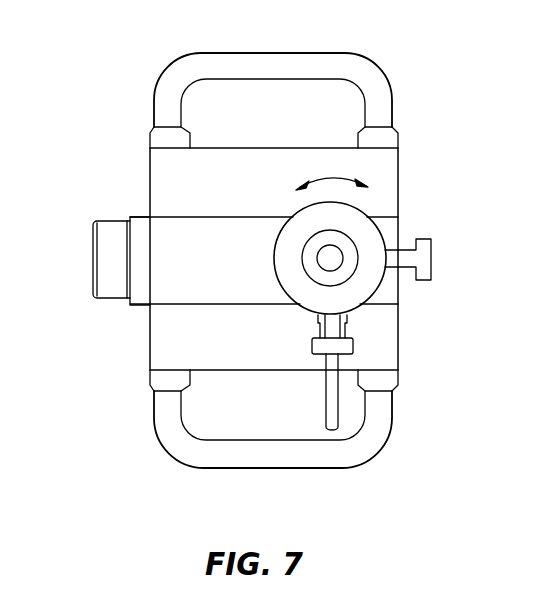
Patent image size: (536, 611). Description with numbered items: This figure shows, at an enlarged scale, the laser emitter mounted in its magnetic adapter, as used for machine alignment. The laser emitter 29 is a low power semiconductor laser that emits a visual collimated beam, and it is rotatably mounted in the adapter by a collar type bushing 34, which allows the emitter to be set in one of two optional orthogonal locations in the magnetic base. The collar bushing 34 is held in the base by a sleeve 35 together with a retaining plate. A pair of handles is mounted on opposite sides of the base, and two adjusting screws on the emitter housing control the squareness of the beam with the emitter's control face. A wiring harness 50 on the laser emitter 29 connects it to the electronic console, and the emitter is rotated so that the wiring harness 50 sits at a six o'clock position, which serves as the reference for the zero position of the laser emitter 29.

The laser emitter 29 is at (283, 290).
The collar type bushing 34 is at (113, 300).
The sleeve 35 is at (140, 215).
The wiring harness 50 is at (337, 407).